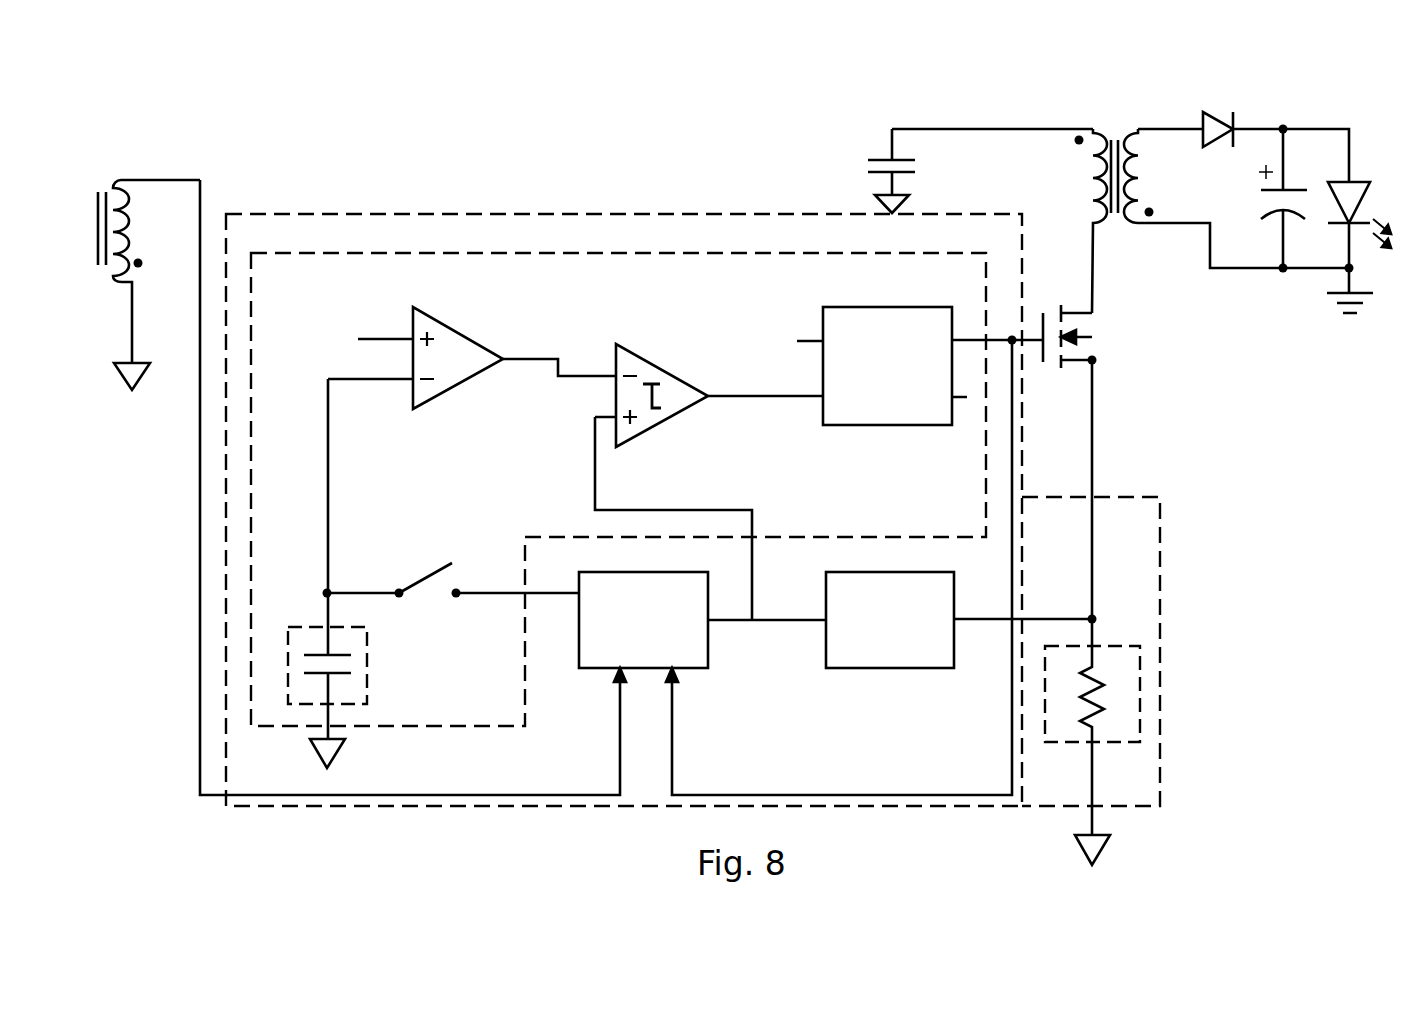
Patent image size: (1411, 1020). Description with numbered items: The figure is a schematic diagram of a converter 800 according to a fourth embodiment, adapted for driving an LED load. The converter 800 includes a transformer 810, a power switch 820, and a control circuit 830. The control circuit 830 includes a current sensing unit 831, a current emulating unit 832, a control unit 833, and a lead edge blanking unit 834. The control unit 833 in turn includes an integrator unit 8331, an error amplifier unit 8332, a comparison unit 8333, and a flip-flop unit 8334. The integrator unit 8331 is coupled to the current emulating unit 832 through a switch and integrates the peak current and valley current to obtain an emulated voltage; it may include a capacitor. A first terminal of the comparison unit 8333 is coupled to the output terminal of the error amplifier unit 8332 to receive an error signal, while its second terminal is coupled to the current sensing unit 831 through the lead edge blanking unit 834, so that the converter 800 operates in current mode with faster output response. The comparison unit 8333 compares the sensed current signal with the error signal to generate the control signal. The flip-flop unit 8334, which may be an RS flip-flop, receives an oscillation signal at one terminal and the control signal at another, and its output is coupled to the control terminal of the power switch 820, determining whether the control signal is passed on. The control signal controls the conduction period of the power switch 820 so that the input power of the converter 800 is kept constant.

The converter 800 is at (224, 94).
The transformer 810 is at (1110, 140).
The power switch 820 is at (1094, 332).
The control circuit 830 is at (1161, 602).
The current sensing unit 831 is at (1141, 710).
The current emulating unit 832 is at (669, 634).
The control unit 833 is at (986, 518).
The lead edge blanking unit 834 is at (916, 634).
The integrator unit 8331 is at (368, 667).
The error amplifier unit 8332 is at (443, 391).
The comparison unit 8333 is at (658, 425).
The flip-flop unit 8334 is at (880, 425).